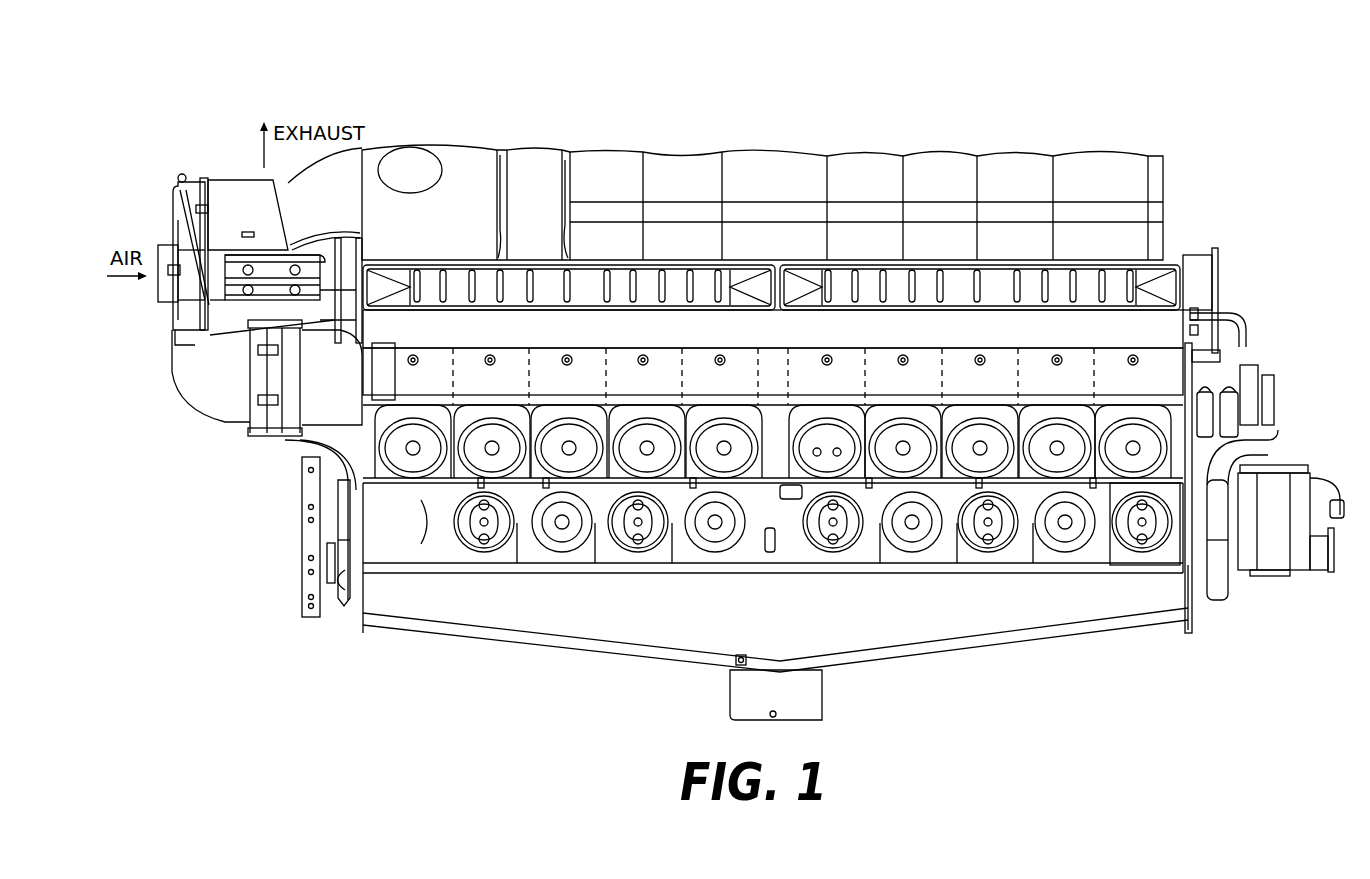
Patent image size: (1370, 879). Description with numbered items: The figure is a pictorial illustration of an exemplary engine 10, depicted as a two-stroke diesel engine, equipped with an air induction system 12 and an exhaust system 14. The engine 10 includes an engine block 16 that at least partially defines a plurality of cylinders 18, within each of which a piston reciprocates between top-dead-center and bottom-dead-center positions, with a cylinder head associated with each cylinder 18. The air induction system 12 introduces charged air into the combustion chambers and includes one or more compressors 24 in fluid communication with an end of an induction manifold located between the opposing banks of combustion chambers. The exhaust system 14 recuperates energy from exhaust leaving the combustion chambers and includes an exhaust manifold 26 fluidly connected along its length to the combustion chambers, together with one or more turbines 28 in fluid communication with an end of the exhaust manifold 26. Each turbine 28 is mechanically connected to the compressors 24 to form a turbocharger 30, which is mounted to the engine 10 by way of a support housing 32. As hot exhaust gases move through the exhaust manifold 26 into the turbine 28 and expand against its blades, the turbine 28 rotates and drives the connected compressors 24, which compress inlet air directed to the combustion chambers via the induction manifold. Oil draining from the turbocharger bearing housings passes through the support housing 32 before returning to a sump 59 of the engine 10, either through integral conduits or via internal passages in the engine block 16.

The engine 10 is at (1194, 128).
The air induction system 12 is at (1234, 265).
The exhaust system 14 is at (1186, 181).
The engine block 16 is at (820, 388).
The cylinder 18 is at (1107, 371).
The compressor 24 is at (191, 173).
The exhaust manifold 26 is at (796, 183).
The turbine 28 is at (248, 173).
The turbocharger 30 is at (273, 108).
The support housing 32 is at (347, 257).
The sump 59 is at (822, 697).